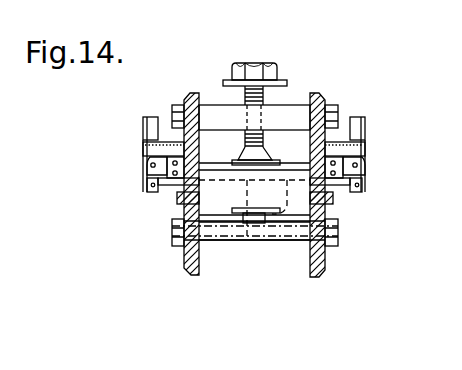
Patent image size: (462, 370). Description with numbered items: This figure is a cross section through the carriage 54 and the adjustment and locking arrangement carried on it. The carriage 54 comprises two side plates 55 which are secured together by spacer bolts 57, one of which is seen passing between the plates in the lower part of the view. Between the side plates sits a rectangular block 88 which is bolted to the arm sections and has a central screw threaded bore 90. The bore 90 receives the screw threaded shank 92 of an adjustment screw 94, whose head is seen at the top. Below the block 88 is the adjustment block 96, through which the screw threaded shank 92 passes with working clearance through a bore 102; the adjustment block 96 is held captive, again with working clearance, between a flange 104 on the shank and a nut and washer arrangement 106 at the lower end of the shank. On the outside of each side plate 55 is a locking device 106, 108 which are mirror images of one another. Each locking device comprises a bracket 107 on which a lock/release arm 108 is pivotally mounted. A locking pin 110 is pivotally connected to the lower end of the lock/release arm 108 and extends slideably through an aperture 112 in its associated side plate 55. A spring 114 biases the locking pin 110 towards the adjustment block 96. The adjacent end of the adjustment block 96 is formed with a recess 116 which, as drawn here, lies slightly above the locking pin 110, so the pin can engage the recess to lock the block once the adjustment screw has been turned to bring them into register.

The carriage 54 is at (323, 258).
The side plates 55 is at (186, 95).
The spacer bolts 57 is at (336, 233).
The rectangular block 88 is at (288, 110).
The central screw threaded bore 90 is at (246, 118).
The screw threaded shank 92 is at (246, 100).
The adjustment screw 94 is at (240, 61).
The adjustment block 96 is at (227, 198).
The bore 102 is at (288, 230).
The flange 104 is at (240, 153).
The locking device 106 is at (367, 110).
The bracket 107 is at (352, 168).
The lock/release arm 108 is at (143, 128).
The locking pin 110 is at (175, 190).
The aperture 112 is at (311, 147).
The spring 114 is at (342, 132).
The recess 116 is at (250, 183).